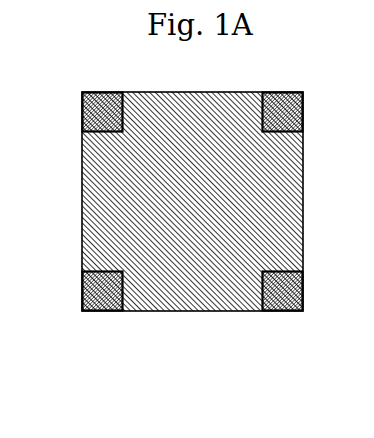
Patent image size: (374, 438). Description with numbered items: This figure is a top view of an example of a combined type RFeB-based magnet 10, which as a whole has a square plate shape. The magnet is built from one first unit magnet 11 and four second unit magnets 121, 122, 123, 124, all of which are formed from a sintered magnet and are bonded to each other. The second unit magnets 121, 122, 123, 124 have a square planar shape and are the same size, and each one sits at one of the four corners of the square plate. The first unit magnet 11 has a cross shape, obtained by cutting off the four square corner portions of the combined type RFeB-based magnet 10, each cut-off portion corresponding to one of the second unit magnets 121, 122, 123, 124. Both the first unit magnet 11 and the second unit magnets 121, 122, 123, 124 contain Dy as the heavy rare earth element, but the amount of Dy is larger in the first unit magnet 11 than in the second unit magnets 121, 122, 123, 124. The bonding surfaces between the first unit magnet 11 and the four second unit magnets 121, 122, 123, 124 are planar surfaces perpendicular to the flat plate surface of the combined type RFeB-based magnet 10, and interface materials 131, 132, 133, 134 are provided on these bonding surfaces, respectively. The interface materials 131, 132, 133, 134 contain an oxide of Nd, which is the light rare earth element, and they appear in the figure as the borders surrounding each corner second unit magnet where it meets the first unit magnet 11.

The combined type RFeB-based magnet 10 is at (194, 231).
The first unit magnet 11 is at (288, 202).
The second unit magnet 121 is at (92, 108).
The second unit magnet 122 is at (296, 109).
The second unit magnet 123 is at (303, 295).
The second unit magnet 124 is at (93, 290).
The interface material 131 is at (83, 134).
The interface material 132 is at (303, 138).
The interface material 133 is at (302, 267).
The interface material 134 is at (83, 268).